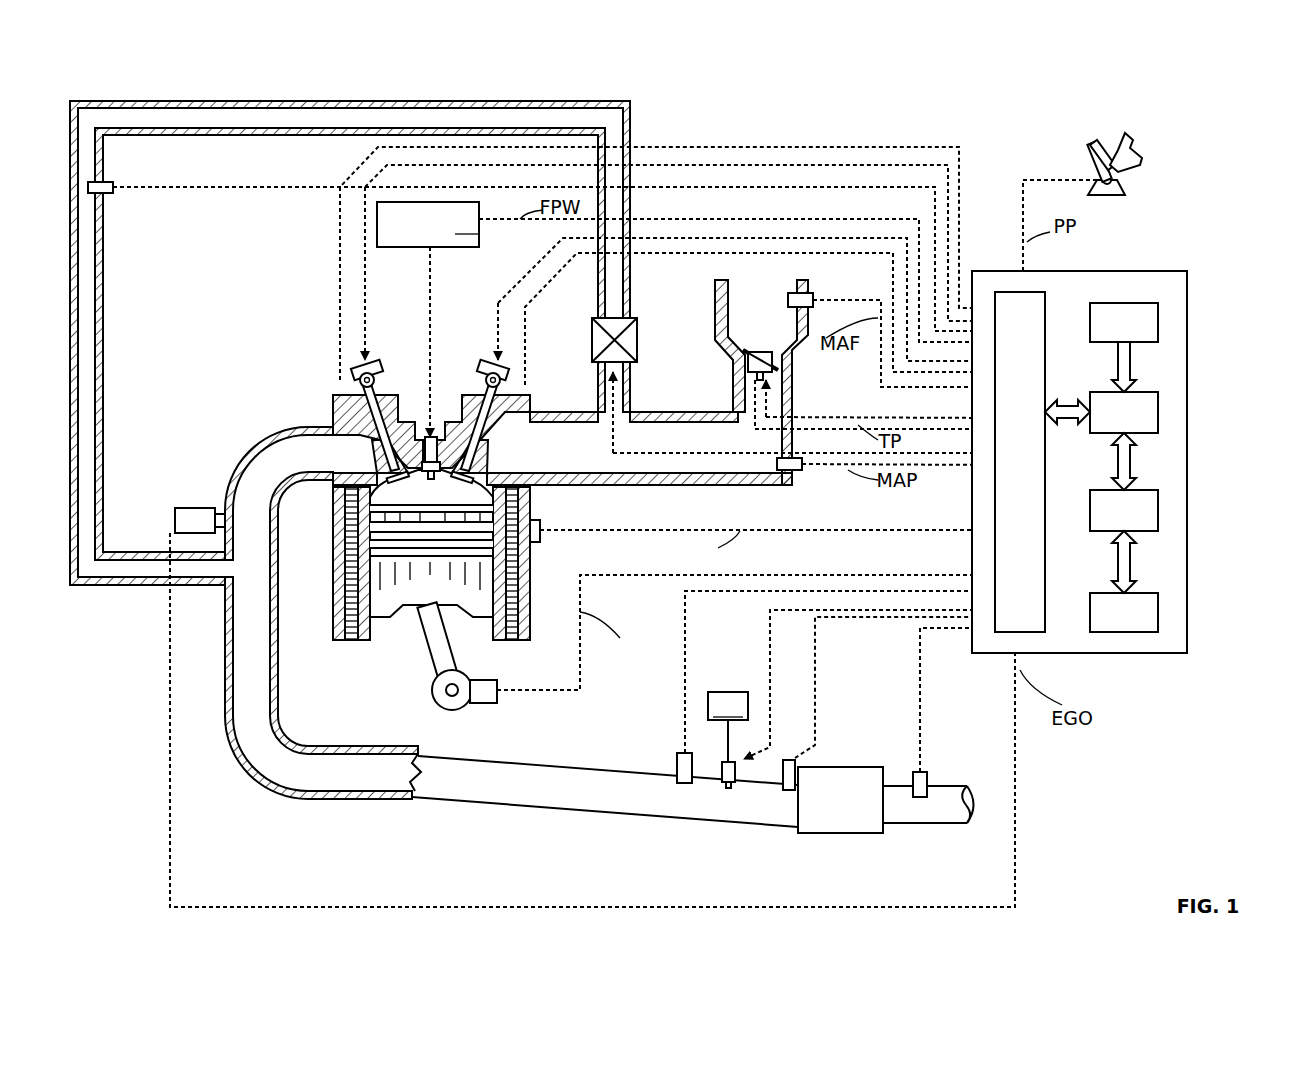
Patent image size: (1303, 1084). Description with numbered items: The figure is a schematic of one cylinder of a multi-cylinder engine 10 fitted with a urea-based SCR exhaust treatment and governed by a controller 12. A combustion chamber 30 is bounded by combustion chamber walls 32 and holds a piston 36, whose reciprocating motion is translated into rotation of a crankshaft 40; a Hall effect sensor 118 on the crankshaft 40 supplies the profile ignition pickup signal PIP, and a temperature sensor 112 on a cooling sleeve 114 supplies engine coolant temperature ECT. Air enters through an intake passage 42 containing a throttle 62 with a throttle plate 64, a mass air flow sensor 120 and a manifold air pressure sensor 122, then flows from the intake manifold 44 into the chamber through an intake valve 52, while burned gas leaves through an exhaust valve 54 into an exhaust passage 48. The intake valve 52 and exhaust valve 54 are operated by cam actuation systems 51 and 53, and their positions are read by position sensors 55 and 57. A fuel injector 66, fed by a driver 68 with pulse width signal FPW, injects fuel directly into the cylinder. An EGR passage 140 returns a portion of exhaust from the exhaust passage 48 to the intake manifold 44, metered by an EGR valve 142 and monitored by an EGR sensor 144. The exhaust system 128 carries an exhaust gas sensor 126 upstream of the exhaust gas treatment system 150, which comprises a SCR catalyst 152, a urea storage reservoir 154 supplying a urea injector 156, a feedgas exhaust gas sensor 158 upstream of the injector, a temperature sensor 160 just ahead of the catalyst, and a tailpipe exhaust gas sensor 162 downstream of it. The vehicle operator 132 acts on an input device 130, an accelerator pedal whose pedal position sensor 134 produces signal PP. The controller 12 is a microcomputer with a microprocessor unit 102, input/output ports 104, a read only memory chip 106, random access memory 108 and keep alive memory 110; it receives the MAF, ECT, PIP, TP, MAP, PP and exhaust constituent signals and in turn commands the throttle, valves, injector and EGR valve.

The engine 10 is at (596, 445).
The controller 12 is at (1125, 447).
The combustion chamber 30 is at (345, 575).
The combustion chamber walls 32 is at (370, 632).
The piston 36 is at (415, 590).
The crankshaft 40 is at (443, 707).
The intake passage 42 is at (835, 374).
The intake manifold 44 is at (580, 467).
The exhaust passage 48 is at (287, 468).
The cam actuation system 51 is at (480, 346).
The intake valve 52 is at (723, 360).
The cam actuation system 53 is at (385, 346).
The exhaust valve 54 is at (644, 315).
The position sensor 55 is at (723, 360).
The position sensor 57 is at (644, 324).
The throttle 62 is at (835, 389).
The throttle plate 64 is at (745, 357).
The fuel injector 66 is at (435, 435).
The driver 68 is at (686, 272).
The microprocessor unit 102 is at (1158, 410).
The input/output ports 104 is at (1046, 300).
The read only memory chip 106 is at (1158, 315).
The random access memory 108 is at (1158, 510).
The keep alive memory 110 is at (1158, 612).
The temperature sensor 112 is at (540, 520).
The cooling sleeve 114 is at (510, 590).
The Hall effect sensor 118 is at (486, 706).
The mass air flow sensor 120 is at (808, 293).
The manifold air pressure sensor 122 is at (802, 470).
The exhaust gas sensor 126 is at (175, 515).
The exhaust system 128 is at (304, 633).
The input device 130 is at (1137, 201).
The vehicle operator 132 is at (1138, 142).
The pedal position sensor 134 is at (1117, 182).
The EGR passage 140 is at (532, 328).
The EGR valve 142 is at (637, 335).
The EGR sensor 144 is at (112, 193).
The exhaust gas treatment system 150 is at (703, 742).
The SCR catalyst 152 is at (824, 811).
The urea storage reservoir 154 is at (851, 686).
The urea injector 156 is at (722, 765).
The feedgas exhaust gas sensor 158 is at (684, 753).
The temperature sensor 160 is at (787, 760).
The tailpipe exhaust gas sensor 162 is at (924, 772).